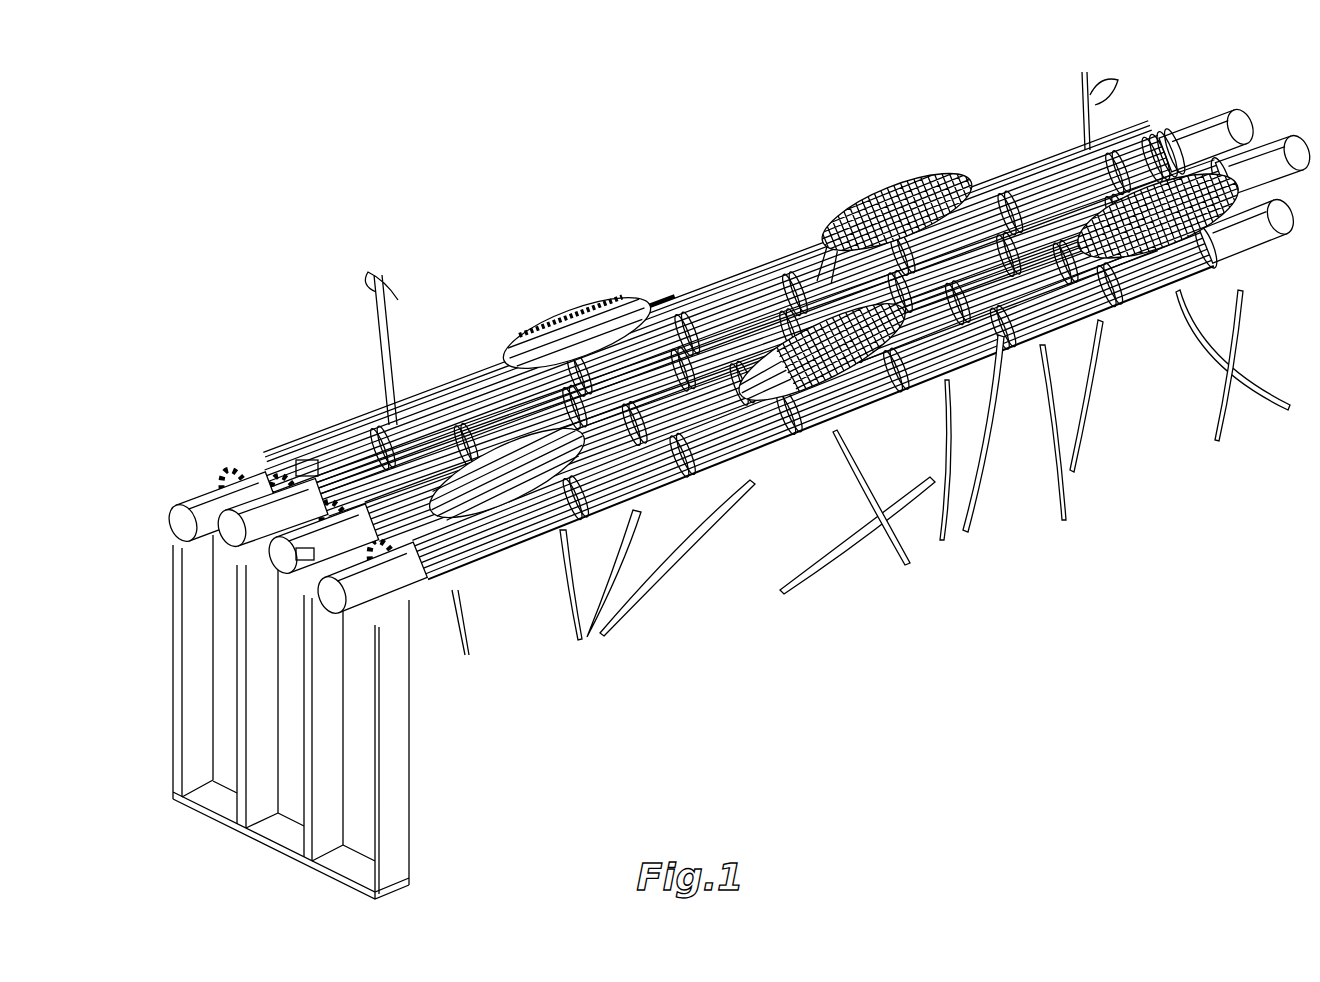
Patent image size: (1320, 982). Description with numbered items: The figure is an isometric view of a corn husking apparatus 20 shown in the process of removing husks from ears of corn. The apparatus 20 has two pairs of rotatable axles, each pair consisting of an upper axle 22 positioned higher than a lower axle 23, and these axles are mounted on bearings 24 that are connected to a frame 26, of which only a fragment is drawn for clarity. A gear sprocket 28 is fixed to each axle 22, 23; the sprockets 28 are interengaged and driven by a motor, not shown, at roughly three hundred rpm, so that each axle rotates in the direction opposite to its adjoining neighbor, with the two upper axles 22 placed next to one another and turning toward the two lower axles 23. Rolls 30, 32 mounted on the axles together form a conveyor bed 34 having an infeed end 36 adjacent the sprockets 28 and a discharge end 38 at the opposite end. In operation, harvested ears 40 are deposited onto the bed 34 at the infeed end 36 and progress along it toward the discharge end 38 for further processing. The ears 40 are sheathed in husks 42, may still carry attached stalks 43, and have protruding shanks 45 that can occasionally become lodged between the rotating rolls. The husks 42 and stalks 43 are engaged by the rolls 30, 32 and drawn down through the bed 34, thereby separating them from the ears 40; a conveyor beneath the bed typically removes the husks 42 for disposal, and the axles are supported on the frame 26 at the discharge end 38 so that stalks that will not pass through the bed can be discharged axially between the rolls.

The corn husking apparatus 20 is at (712, 392).
The upper axle 22 is at (305, 558).
The lower axle 23 is at (182, 515).
The bearing 24 is at (222, 490).
The frame 26 is at (405, 818).
The gear sprocket 28 is at (255, 468).
The roll 30 is at (385, 435).
The roll 32 is at (416, 420).
The conveyor bed 34 is at (745, 283).
The infeed end 36 is at (302, 460).
The discharge end 38 is at (997, 160).
The harvested ear 40 is at (575, 302).
The husk 42 is at (700, 572).
The stalk 43 is at (405, 285).
The shank 45 is at (655, 318).